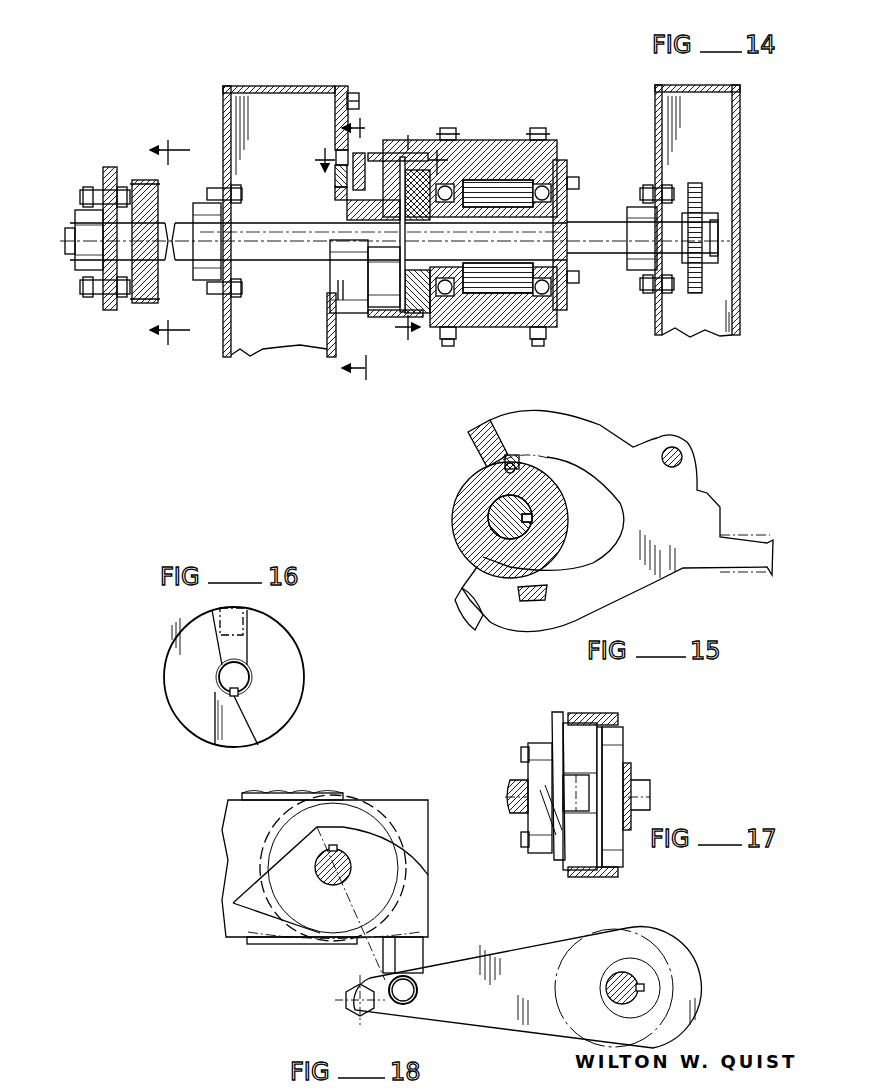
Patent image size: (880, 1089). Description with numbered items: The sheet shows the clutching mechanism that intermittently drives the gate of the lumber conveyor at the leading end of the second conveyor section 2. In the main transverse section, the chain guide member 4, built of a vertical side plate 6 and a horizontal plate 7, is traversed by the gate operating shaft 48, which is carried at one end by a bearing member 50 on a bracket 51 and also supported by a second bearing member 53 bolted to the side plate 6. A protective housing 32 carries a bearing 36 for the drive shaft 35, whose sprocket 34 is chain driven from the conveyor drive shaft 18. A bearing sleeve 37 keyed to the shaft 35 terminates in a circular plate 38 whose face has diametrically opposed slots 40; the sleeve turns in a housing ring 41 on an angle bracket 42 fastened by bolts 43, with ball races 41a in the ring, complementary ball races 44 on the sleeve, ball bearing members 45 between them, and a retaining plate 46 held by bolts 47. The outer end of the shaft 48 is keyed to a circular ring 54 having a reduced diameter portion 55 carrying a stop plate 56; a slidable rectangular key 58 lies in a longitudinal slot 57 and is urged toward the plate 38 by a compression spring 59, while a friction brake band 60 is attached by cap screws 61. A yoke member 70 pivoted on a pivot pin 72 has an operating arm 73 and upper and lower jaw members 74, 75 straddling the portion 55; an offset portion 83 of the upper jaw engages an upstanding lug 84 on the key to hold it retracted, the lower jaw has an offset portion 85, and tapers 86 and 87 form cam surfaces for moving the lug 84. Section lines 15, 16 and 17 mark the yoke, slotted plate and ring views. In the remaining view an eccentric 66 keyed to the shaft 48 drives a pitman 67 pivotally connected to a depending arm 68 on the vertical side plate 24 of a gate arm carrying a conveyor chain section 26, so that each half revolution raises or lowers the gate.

In FIG. 14, the second conveyor section 2 is at (200, 101).
In FIG. 14, the chain guide member 4 is at (242, 362).
In FIG. 14, the vertical side plate 6 is at (223, 118).
In FIG. 14, the horizontal plate 7 is at (290, 92).
In FIG. 14, the section line 15— 15 is at (366, 245).
In FIG. 14, the section line 16— 16 is at (408, 239).
In FIG. 14, the section line 17— 17 is at (378, 161).
In FIG. 14, the conveyor drive shaft 18 is at (171, 240).
In FIG. 18, the conveyor drive shaft 18 is at (328, 885).
In FIG. 18, the vertical side plate 24 is at (410, 802).
In FIG. 18, the conveyor chain section 26 is at (281, 793).
In FIG. 14, the protective housing 32 is at (740, 131).
In FIG. 14, the sprocket 34 is at (700, 213).
In FIG. 14, the drive shaft 35 is at (604, 236).
In FIG. 16, the drive shaft 35 is at (238, 680).
In FIG. 17, the drive shaft 35 is at (648, 800).
In FIG. 14, the bearing 36 is at (636, 270).
In FIG. 14, the bearing sleeve 37 is at (606, 238).
In FIG. 17, the bearing sleeve 37 is at (632, 775).
In FIG. 14, the circular plate 38 is at (422, 320).
In FIG. 16, the circular plate 38 is at (292, 690).
In FIG. 17, the circular plate 38 is at (618, 855).
In FIG. 16, the slots 40 is at (240, 650).
In FIG. 14, the housing ring 41 is at (556, 176).
In FIG. 14, the ball races 41a is at (478, 172).
In FIG. 14, the angle bracket 42 is at (476, 170).
In FIG. 14, the bolts 43 is at (359, 101).
In FIG. 14, the ball races 44 is at (466, 195).
In FIG. 14, the ball bearing members 45 is at (540, 205).
In FIG. 14, the retaining plate 46 is at (560, 303).
In FIG. 14, the bolts 47 is at (579, 185).
In FIG. 14, the gate operating shaft 48 is at (290, 261).
In FIG. 15, the gate operating shaft 48 is at (540, 520).
In FIG. 17, the gate operating shaft 48 is at (514, 797).
In FIG. 18, the gate operating shaft 48 is at (606, 986).
In FIG. 14, the bearing member 50 is at (96, 263).
In FIG. 14, the bracket 51 is at (115, 312).
In FIG. 14, the second bearing member 53 is at (203, 279).
In FIG. 14, the circular ring 54 is at (350, 212).
In FIG. 15, the circular ring 54 is at (468, 517).
In FIG. 17, the circular ring 54 is at (578, 856).
In FIG. 14, the reduced diameter portion 55 is at (331, 308).
In FIG. 14, the stop plate 56 is at (330, 260).
In FIG. 17, the stop plate 56 is at (530, 852).
In FIG. 14, the longitudinal slot 57 is at (338, 286).
In FIG. 15, the longitudinal slot 57 is at (543, 475).
In FIG. 17, the longitudinal slot 57 is at (580, 795).
In FIG. 14, the slidable rectangular key 58 is at (371, 171).
In FIG. 15, the slidable rectangular key 58 is at (520, 460).
In FIG. 16, the slidable rectangular key 58 is at (236, 612).
In FIG. 14, the compression spring 59 is at (337, 196).
In FIG. 15, the compression spring 59 is at (510, 462).
In FIG. 14, the friction brake band 60 is at (380, 318).
In FIG. 17, the friction brake band 60 is at (597, 722).
In FIG. 14, the cap screws 61 is at (384, 277).
In FIG. 18, the eccentric 66 is at (676, 990).
In FIG. 18, the pitman 67 is at (500, 1014).
In FIG. 18, the depending arm 68 is at (423, 953).
In FIG. 15, the yoke member 70 is at (697, 520).
In FIG. 15, the pivot pin 72 is at (682, 455).
In FIG. 15, the operating arm 73 is at (752, 545).
In FIG. 14, the upper jaw member 74 is at (370, 155).
In FIG. 15, the upper jaw member 74 is at (598, 455).
In FIG. 17, the upper jaw member 74 is at (556, 735).
In FIG. 14, the lower jaw member 75 is at (340, 348).
In FIG. 15, the lower jaw member 75 is at (555, 628).
In FIG. 15, the offset portion 83 is at (540, 458).
In FIG. 14, the upstanding lug 84 is at (334, 182).
In FIG. 15, the upstanding lug 84 is at (512, 430).
In FIG. 17, the upstanding lug 84 is at (545, 792).
In FIG. 15, the offset portion 85 is at (470, 597).
In FIG. 17, the tapered end 86 is at (556, 828).
In FIG. 15, the tapered end 87 is at (525, 602).